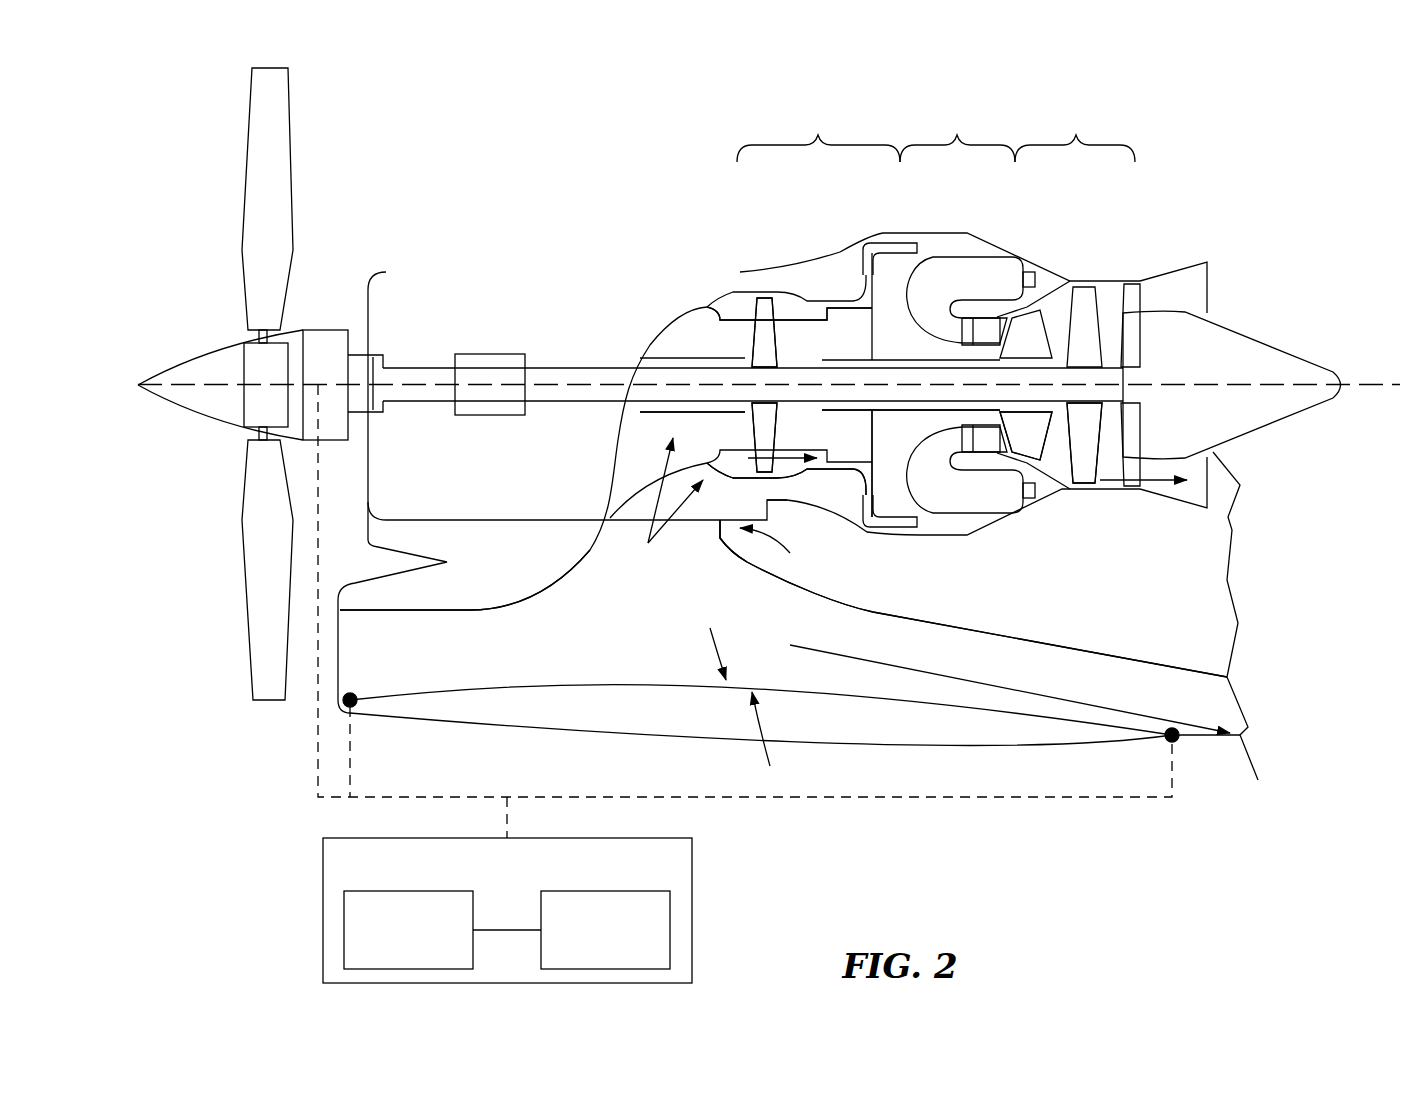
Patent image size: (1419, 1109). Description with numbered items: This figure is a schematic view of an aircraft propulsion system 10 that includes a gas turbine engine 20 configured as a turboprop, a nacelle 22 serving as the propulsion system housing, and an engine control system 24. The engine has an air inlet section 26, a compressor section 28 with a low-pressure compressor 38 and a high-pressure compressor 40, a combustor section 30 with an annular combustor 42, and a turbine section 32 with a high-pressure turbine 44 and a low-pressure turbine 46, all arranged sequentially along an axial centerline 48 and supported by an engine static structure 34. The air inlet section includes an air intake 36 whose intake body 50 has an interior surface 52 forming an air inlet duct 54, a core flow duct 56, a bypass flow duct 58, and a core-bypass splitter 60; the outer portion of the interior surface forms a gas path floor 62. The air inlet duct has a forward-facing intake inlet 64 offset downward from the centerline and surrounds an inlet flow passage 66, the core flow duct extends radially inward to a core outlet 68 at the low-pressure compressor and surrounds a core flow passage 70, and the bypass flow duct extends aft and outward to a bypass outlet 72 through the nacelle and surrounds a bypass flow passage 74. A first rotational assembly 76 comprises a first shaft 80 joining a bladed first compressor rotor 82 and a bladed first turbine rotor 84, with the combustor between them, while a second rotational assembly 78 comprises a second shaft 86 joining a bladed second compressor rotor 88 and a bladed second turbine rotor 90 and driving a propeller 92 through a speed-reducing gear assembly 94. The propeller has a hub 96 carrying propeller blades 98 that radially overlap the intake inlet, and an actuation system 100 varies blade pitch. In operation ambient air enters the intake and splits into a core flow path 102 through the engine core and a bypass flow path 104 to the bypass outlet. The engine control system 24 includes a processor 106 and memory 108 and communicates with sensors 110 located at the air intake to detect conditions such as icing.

The propulsion system 10 is at (1250, 187).
The gas turbine engine 20 is at (578, 212).
The nacelle 22 is at (578, 737).
The engine control system 24 is at (323, 870).
The air inlet section 26 is at (336, 737).
The compressor section 28 is at (818, 133).
The combustor section 30 is at (957, 133).
The turbine section 32 is at (1075, 133).
The engine static structure 34 is at (693, 253).
The air intake 36 is at (773, 743).
The low-pressure compressor 38 is at (752, 331).
The high-pressure compressor 40 is at (843, 291).
The annular combustor 42 is at (970, 268).
The high-pressure turbine 44 is at (1049, 308).
The low-pressure turbine 46 is at (1111, 299).
The axial centerline 48 is at (1390, 405).
The intake body 50 is at (573, 570).
The interior surface 52 is at (573, 689).
The air inlet duct 54 is at (478, 606).
The core flow duct 56 is at (781, 551).
The bypass flow duct 58 is at (897, 613).
The core-bypass splitter 60 is at (728, 541).
The gas path floor 62 is at (707, 638).
The intake inlet 64 is at (338, 630).
The inlet flow passage 66 is at (451, 663).
The core outlet 68 is at (748, 432).
The core flow passage 70 is at (688, 440).
The bypass outlet 72 is at (1240, 757).
The bypass flow passage 74 is at (1001, 675).
The first rotational assembly 76 is at (903, 355).
The second rotational assembly 78 is at (808, 357).
The first shaft 80 is at (905, 404).
The bladed first compressor rotor 82 is at (853, 437).
The bladed first turbine rotor 84 is at (1032, 437).
The second shaft 86 is at (583, 400).
The bladed second compressor rotor 88 is at (745, 475).
The bladed second turbine rotor 90 is at (1090, 462).
The propeller 92 is at (183, 335).
The speed-reducing gear assembly 94 is at (492, 358).
The hub 96 is at (205, 402).
The propeller blades 98 is at (278, 206).
The actuation system 100 is at (250, 351).
The core flow path 102 is at (683, 503).
The bypass flow path 104 is at (1145, 705).
The processor 106 is at (343, 925).
The memory 108 is at (670, 922).
The sensors 110 is at (357, 708).